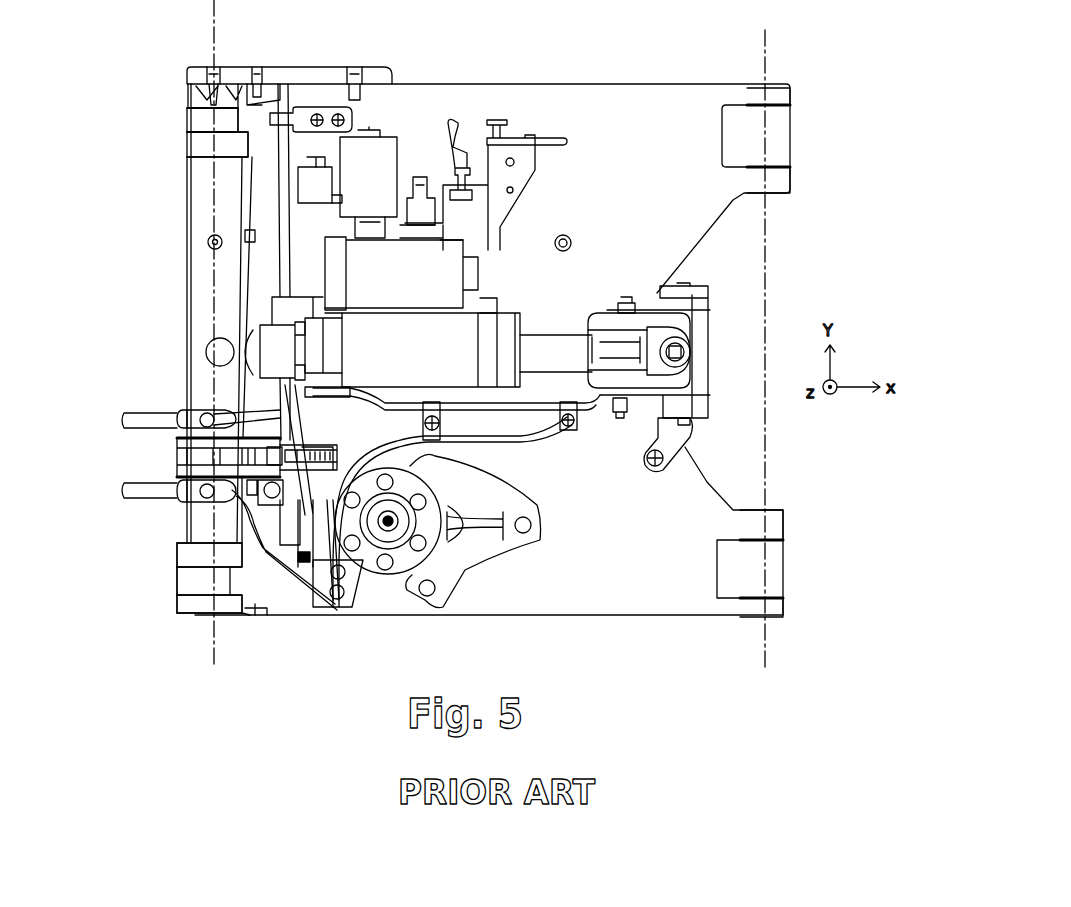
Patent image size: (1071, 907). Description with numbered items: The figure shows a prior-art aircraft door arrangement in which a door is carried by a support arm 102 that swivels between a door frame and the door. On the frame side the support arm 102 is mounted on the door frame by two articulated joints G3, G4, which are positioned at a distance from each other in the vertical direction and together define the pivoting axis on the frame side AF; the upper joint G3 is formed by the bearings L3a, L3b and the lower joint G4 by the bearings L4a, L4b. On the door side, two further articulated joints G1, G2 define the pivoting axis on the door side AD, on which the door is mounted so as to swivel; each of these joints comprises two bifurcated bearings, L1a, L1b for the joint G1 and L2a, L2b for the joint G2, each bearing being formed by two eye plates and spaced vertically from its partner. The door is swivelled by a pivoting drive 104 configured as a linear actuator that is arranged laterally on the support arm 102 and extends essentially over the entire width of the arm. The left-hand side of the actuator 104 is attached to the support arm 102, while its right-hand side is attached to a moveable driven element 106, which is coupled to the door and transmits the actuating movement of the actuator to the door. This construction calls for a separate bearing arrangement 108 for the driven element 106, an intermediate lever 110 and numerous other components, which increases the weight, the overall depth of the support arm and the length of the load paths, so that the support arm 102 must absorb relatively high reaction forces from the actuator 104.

The support arm 102 is at (532, 97).
The pivoting drive/actuator 104 is at (458, 342).
The driven element 106 is at (645, 395).
The bearing arrangement for driven element 108 is at (674, 334).
The intermediate lever 110 is at (652, 322).
The bearing L1a is at (790, 96).
The bearing L1b is at (790, 183).
The articulated joint on the door side G1 is at (853, 112).
The bearing L2a is at (783, 522).
The bearing L2b is at (783, 607).
The articulated joint on the door side G2 is at (850, 547).
The bearing L3a is at (192, 100).
The bearing L3b is at (190, 147).
The articulated joint on the frame side G3 is at (120, 157).
The bearing L4a is at (190, 553).
The bearing L4b is at (190, 600).
The articulated joint on the frame side G4 is at (120, 552).
The pivoting axis on the frame side AF is at (206, 677).
The pivoting axis on the door side AD is at (758, 650).